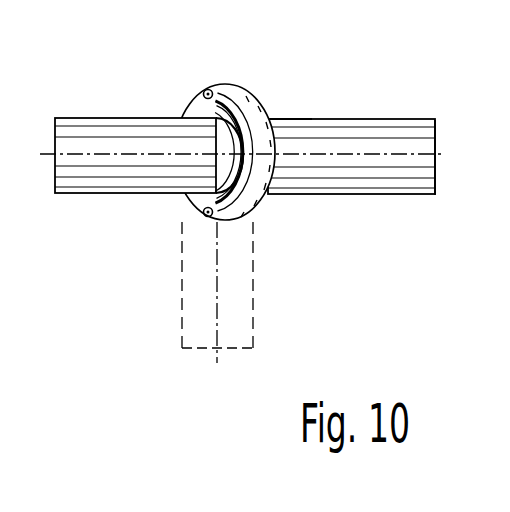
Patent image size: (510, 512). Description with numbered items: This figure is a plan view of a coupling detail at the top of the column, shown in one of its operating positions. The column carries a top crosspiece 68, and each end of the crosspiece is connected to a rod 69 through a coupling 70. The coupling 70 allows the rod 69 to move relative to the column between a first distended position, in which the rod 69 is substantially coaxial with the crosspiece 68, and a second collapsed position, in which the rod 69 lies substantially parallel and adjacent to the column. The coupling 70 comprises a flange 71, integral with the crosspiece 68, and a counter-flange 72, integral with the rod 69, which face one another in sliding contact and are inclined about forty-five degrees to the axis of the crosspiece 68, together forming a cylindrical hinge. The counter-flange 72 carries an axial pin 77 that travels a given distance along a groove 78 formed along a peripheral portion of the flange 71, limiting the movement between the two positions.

The top crosspiece 68 is at (137, 138).
The rod 69 is at (357, 148).
The coupling 70 is at (258, 76).
The flange 71 is at (183, 112).
The counter-flange 72 is at (307, 116).
The axial pin 77 is at (201, 88).
The groove 78 is at (268, 107).